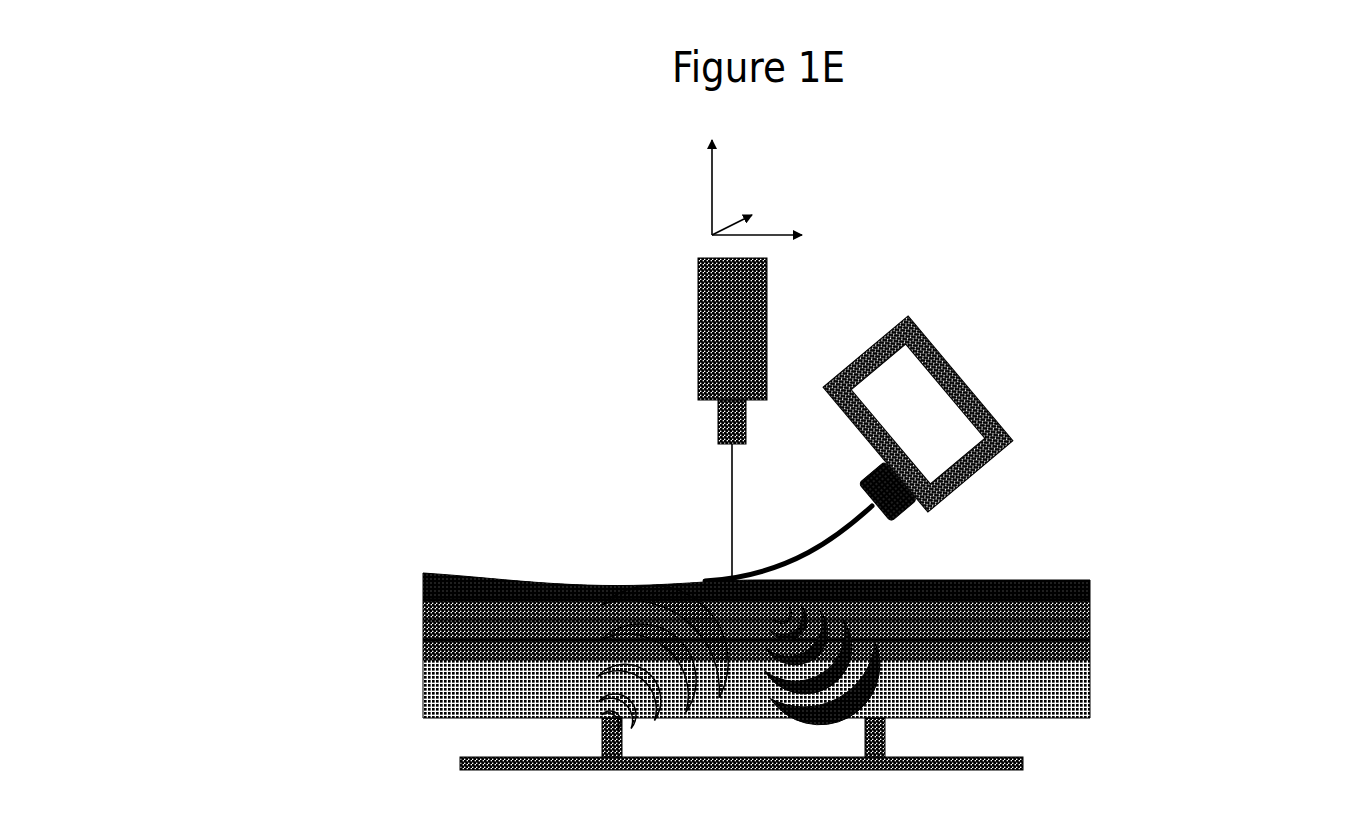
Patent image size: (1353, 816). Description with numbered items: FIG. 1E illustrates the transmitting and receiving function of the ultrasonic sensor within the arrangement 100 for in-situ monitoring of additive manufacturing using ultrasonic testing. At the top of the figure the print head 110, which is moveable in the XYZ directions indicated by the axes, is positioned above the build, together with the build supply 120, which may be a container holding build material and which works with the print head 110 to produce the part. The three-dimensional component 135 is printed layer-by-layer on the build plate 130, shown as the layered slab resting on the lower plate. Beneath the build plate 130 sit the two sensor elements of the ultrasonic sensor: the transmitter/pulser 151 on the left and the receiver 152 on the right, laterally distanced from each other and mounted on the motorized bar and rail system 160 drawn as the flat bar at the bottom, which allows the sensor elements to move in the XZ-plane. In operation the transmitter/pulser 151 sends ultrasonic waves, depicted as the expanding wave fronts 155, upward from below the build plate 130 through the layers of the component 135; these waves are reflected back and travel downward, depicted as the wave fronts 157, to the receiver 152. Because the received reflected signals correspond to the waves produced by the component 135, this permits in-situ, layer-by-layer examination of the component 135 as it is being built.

The arrangement 100 is at (425, 400).
The print head 110 is at (767, 284).
The build supply 120 is at (977, 392).
The build plate 130 is at (1090, 685).
The three-dimensional component 135 is at (1090, 607).
The transmitter/pulser 151 is at (600, 738).
The receiver 152 is at (887, 738).
The first acoustic wave 155 is at (652, 597).
The second acoustic wave 157 is at (873, 650).
The motorized bar and rail system 160 is at (460, 763).